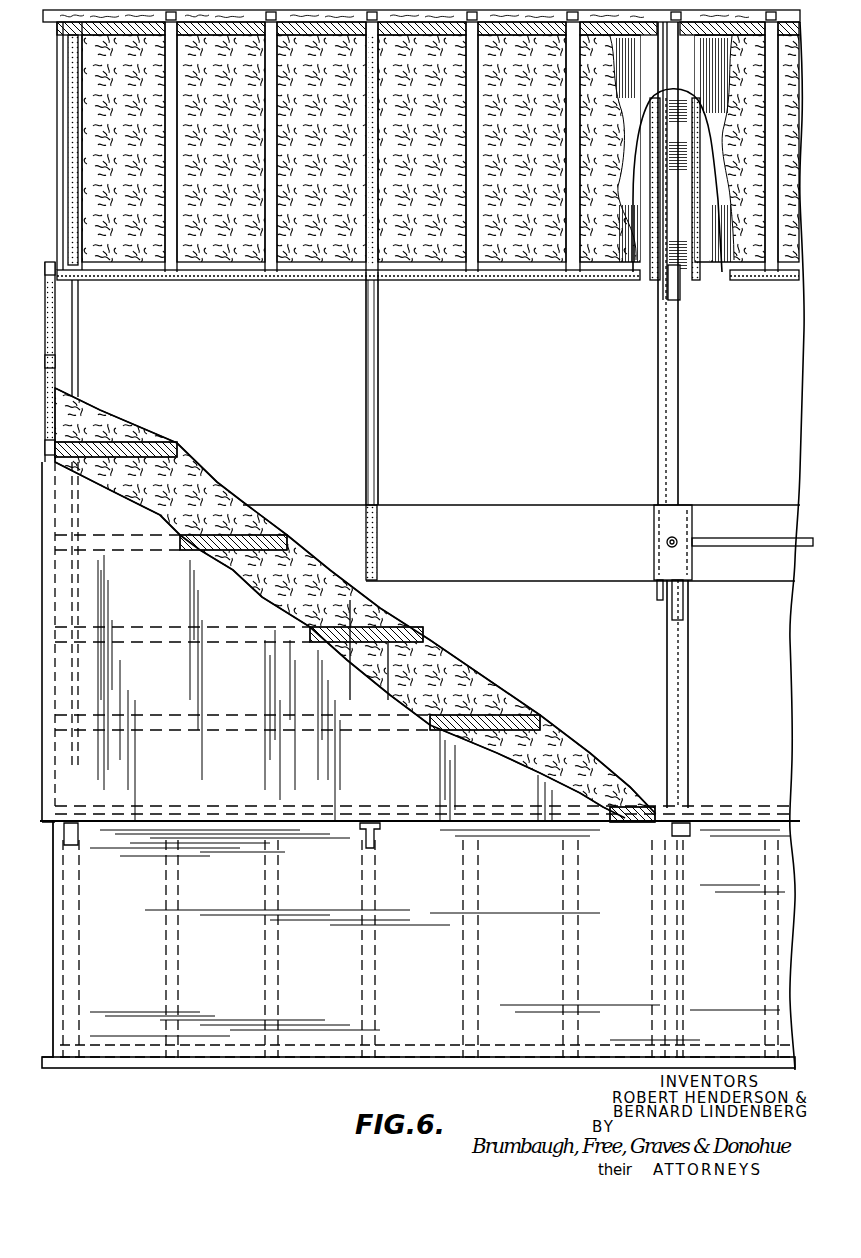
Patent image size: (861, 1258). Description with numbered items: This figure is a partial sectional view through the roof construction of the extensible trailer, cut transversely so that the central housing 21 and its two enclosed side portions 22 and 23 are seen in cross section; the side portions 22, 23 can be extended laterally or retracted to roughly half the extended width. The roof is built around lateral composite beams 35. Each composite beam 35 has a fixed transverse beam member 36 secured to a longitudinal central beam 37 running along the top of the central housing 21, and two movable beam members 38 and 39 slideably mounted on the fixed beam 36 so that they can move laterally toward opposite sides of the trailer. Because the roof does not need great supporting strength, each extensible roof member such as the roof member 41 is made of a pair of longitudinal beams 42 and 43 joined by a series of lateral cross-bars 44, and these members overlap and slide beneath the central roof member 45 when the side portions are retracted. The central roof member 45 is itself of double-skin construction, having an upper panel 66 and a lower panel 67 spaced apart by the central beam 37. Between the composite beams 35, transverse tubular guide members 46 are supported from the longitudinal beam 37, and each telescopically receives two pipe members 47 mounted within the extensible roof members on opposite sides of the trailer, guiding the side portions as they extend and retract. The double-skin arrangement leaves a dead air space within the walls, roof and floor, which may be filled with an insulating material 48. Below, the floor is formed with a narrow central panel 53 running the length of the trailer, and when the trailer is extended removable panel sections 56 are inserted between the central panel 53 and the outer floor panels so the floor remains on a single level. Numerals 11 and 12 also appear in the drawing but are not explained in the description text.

The vertical channel member 11 is at (680, 215).
The vertical column 12 is at (373, 163).
The central housing 21 is at (40, 677).
The enclosed side portion 22 is at (210, 1075).
The enclosed side portion 23 is at (57, 100).
The lateral composite beam 35 is at (697, 497).
The fixed transverse beam member 36 is at (680, 405).
The longitudinal central beam 37 is at (280, 542).
The movable beam member 38 is at (660, 372).
The movable beam member 39 is at (688, 688).
The extensible roof member 41 is at (57, 158).
The longitudinal beam 42 is at (270, 271).
The longitudinal beam 43 is at (88, 28).
The lateral cross-bar 44 is at (176, 160).
The central roof member 45 is at (90, 765).
The transverse tubular guide member 46 is at (78, 370).
The pipe member 47 is at (72, 195).
The insulating material 48 is at (530, 263).
The narrow central panel 53 is at (591, 506).
The removable panel section 56 is at (502, 400).
The upper panel 66 is at (530, 773).
The lower panel 67 is at (497, 693).